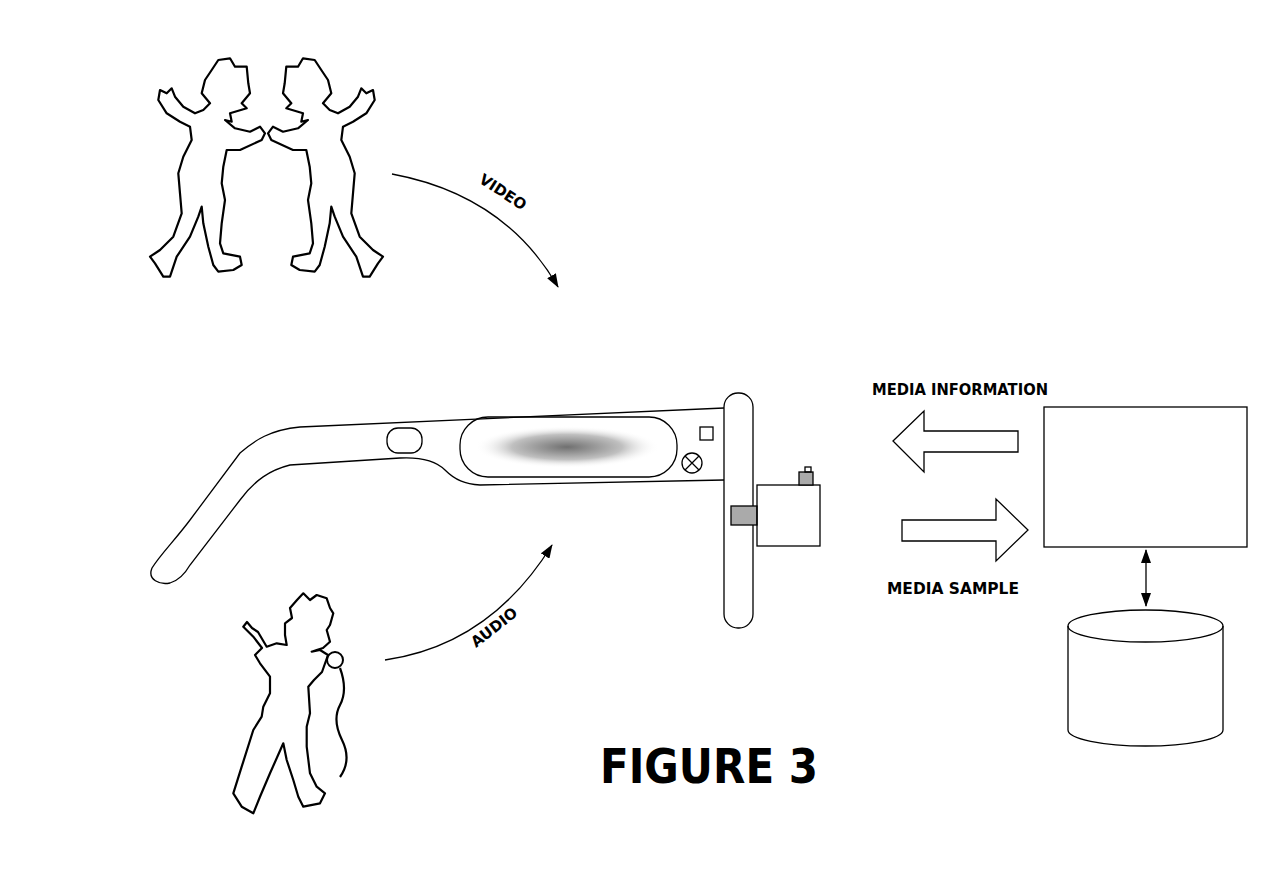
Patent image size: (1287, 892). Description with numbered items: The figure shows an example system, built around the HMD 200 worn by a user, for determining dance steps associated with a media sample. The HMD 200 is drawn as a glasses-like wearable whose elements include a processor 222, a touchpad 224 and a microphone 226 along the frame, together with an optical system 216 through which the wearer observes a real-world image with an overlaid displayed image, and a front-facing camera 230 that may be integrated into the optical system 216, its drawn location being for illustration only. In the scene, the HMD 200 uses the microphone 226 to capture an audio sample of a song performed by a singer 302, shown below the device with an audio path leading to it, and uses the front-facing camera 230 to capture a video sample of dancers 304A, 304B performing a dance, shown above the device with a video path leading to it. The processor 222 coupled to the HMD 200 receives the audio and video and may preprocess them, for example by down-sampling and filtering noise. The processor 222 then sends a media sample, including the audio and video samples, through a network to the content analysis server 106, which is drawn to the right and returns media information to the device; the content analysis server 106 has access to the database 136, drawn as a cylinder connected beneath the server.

The HMD 200 is at (712, 357).
The optical system 216 is at (820, 535).
The processor 222 is at (408, 428).
The touchpad 224 is at (558, 421).
The microphone 226 is at (688, 455).
The front-facing camera 230 is at (811, 467).
The singer 302 is at (260, 718).
The dancer 304A is at (217, 272).
The dancer 304B is at (297, 272).
The content analysis server 106 is at (1145, 477).
The database 136 is at (1145, 678).